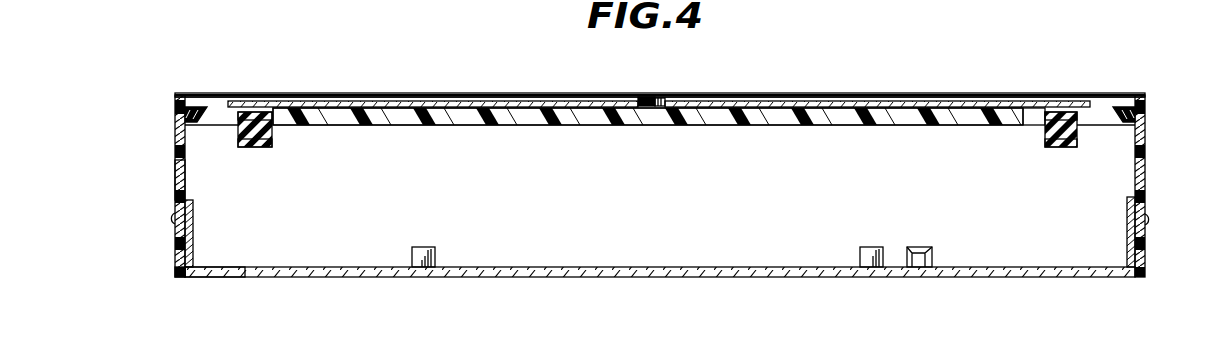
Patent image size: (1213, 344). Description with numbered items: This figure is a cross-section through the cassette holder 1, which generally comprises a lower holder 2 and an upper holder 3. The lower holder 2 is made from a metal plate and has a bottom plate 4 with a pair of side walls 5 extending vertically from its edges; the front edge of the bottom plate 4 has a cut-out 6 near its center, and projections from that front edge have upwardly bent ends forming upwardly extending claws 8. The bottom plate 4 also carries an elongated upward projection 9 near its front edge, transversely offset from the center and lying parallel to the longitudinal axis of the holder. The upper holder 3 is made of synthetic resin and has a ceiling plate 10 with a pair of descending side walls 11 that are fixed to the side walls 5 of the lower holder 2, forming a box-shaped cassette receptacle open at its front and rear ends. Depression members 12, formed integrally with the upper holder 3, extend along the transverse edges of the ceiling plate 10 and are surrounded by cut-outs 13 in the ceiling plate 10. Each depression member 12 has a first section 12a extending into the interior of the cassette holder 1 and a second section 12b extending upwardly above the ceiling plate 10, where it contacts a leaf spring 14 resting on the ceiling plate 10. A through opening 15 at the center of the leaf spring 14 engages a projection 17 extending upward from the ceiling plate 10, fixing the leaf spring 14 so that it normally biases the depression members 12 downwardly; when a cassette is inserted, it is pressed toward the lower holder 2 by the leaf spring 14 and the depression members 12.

The cassette holder 1 is at (183, 93).
The lower holder 2 is at (680, 267).
The upper holder 3 is at (178, 177).
The bottom plate 4 is at (210, 270).
The side walls 5 is at (193, 217).
The cut-out 6 is at (185, 275).
The claws 8 is at (428, 248).
The projection 9 is at (920, 248).
The ceiling plate 10 is at (848, 114).
The side walls 11 is at (178, 140).
The depression members 12 is at (280, 109).
The first section 12a is at (256, 148).
The second section 12b is at (254, 112).
The cut-outs 13 is at (205, 118).
The leaf spring 14 is at (503, 103).
The through opening 15 is at (661, 99).
The projection 17 is at (645, 98).